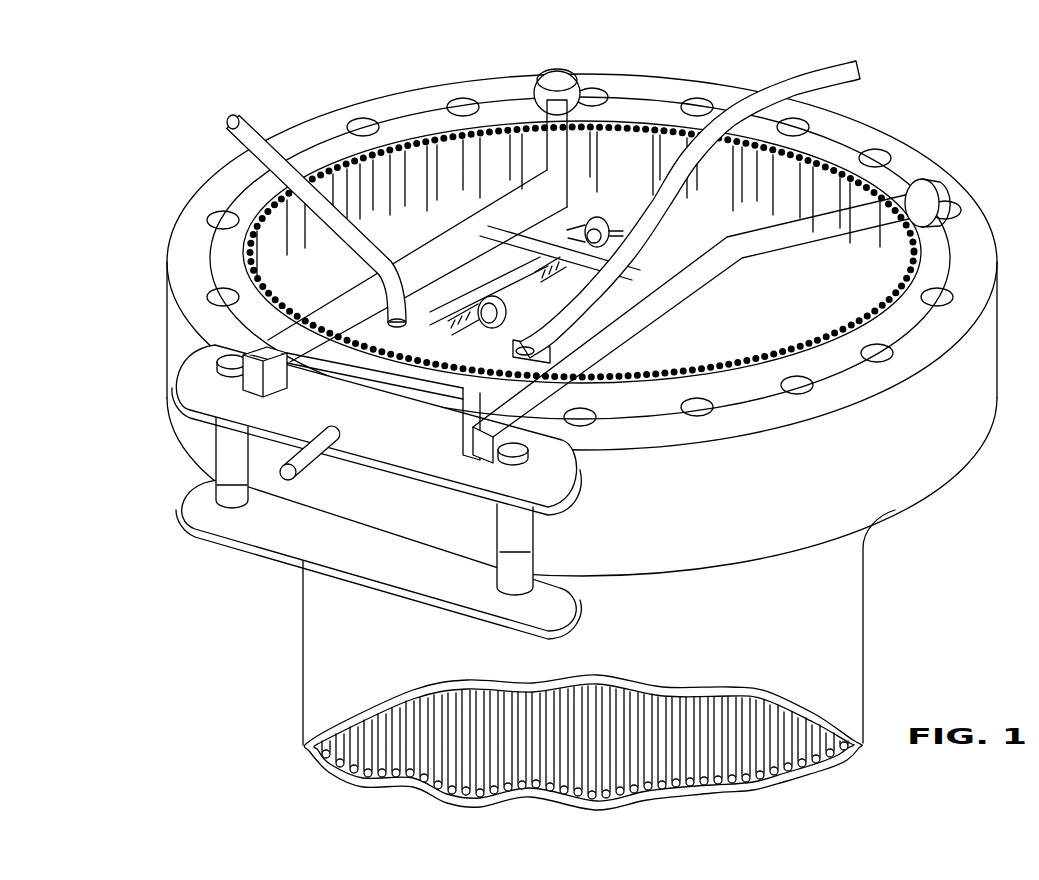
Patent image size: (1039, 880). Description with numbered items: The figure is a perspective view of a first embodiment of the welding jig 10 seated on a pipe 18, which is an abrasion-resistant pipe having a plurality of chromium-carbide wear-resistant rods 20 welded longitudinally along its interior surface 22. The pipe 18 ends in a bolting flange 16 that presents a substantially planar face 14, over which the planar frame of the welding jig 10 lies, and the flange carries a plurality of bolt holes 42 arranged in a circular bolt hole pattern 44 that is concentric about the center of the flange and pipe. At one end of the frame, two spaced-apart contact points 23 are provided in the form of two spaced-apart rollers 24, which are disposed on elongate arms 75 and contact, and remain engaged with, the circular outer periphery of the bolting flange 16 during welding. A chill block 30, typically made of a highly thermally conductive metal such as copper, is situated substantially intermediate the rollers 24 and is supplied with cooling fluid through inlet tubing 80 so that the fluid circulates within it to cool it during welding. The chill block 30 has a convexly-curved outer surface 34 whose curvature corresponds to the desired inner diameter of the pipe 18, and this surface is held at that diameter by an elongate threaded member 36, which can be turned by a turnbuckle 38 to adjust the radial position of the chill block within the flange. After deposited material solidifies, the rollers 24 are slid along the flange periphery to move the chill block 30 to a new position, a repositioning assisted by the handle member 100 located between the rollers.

The welding jig 10 is at (687, 296).
The planar face 14 is at (872, 392).
The bolting flange 16 is at (937, 420).
The pipe 18 is at (850, 635).
The chromium-carbide wear-resistant rods 20 is at (437, 140).
The interior surface 22 is at (673, 368).
The contact points 23 is at (213, 432).
The rollers 24 is at (562, 72).
The chill block 30 is at (540, 350).
The convexly-curved outer surface 34 is at (612, 420).
The elongate threaded member 36 is at (465, 327).
The turnbuckle 38 is at (590, 217).
The bolt holes 42 is at (803, 393).
The circular bolt hole pattern 44 is at (248, 188).
The elongate arms 75 is at (543, 160).
The inlet tubing 80 is at (250, 122).
The handle member 100 is at (362, 500).